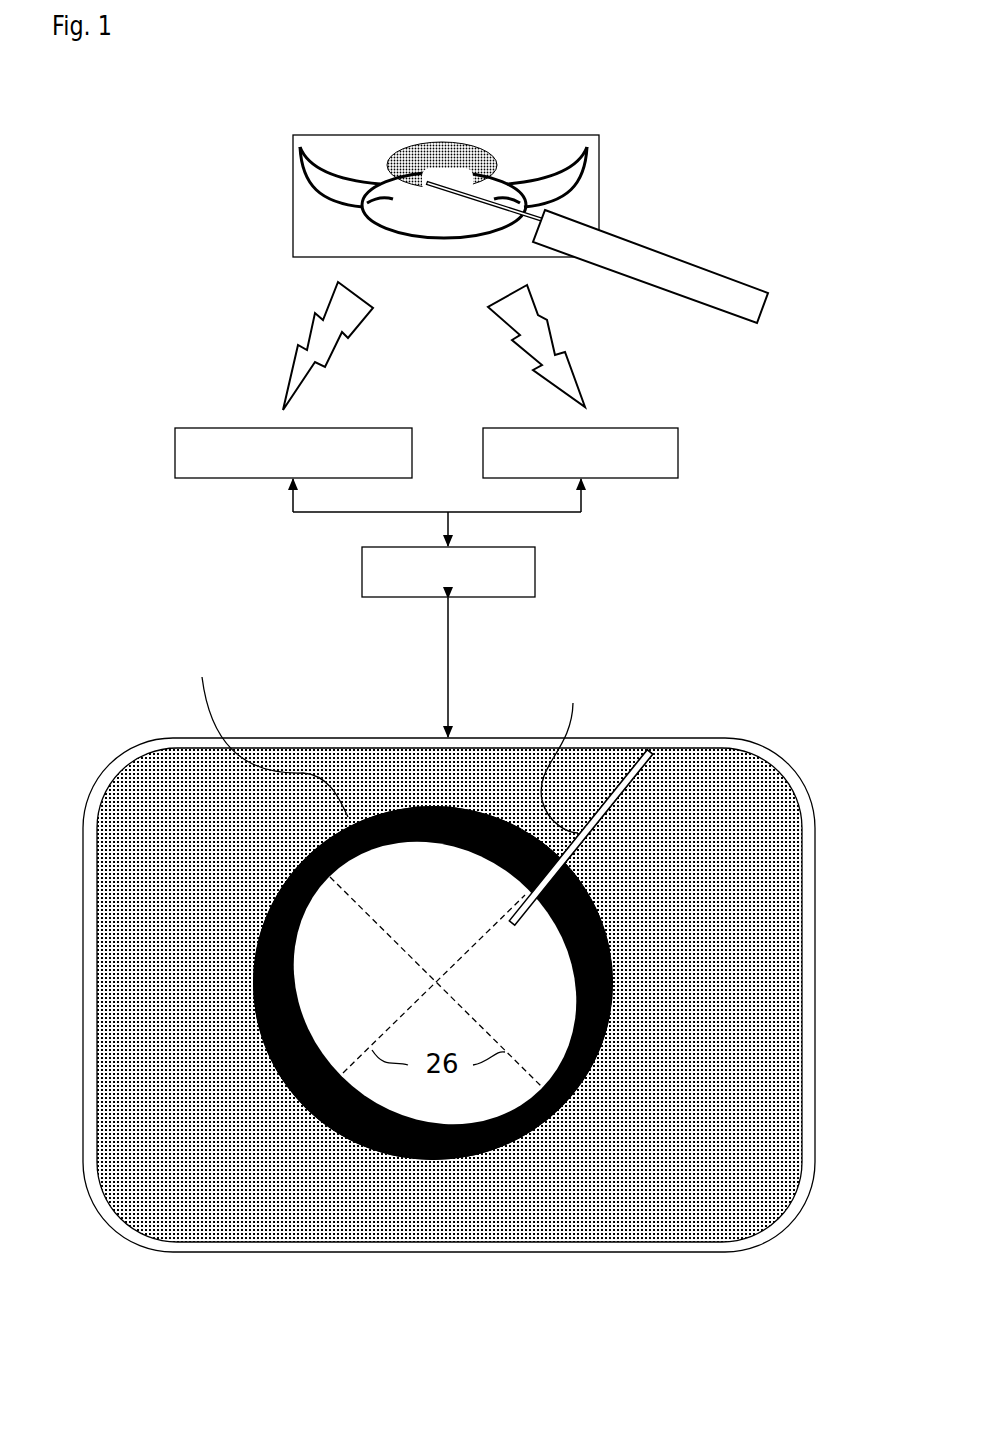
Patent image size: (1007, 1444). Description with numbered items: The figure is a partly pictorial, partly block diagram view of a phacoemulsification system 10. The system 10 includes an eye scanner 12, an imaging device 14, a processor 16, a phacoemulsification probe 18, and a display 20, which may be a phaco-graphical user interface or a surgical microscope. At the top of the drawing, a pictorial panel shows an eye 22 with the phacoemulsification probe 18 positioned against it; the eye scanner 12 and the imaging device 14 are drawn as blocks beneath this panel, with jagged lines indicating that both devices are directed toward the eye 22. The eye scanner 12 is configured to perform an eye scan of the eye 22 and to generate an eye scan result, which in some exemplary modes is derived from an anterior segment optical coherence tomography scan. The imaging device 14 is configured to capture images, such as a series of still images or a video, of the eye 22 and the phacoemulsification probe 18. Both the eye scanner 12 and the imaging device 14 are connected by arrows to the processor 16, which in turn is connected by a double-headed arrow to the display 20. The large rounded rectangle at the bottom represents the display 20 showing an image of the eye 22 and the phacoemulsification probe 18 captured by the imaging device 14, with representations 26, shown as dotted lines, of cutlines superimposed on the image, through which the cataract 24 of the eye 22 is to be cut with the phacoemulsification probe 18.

The phacoemulsification system 10 is at (798, 112).
The eye scanner 12 is at (682, 452).
The imaging device 14 is at (175, 452).
The processor 16 is at (362, 572).
The phacoemulsification probe 18 is at (702, 267).
The display 20 is at (448, 1253).
The eye 22 is at (368, 220).
The cataract 24 is at (483, 148).
The representations of cutlines 26 is at (372, 1050).